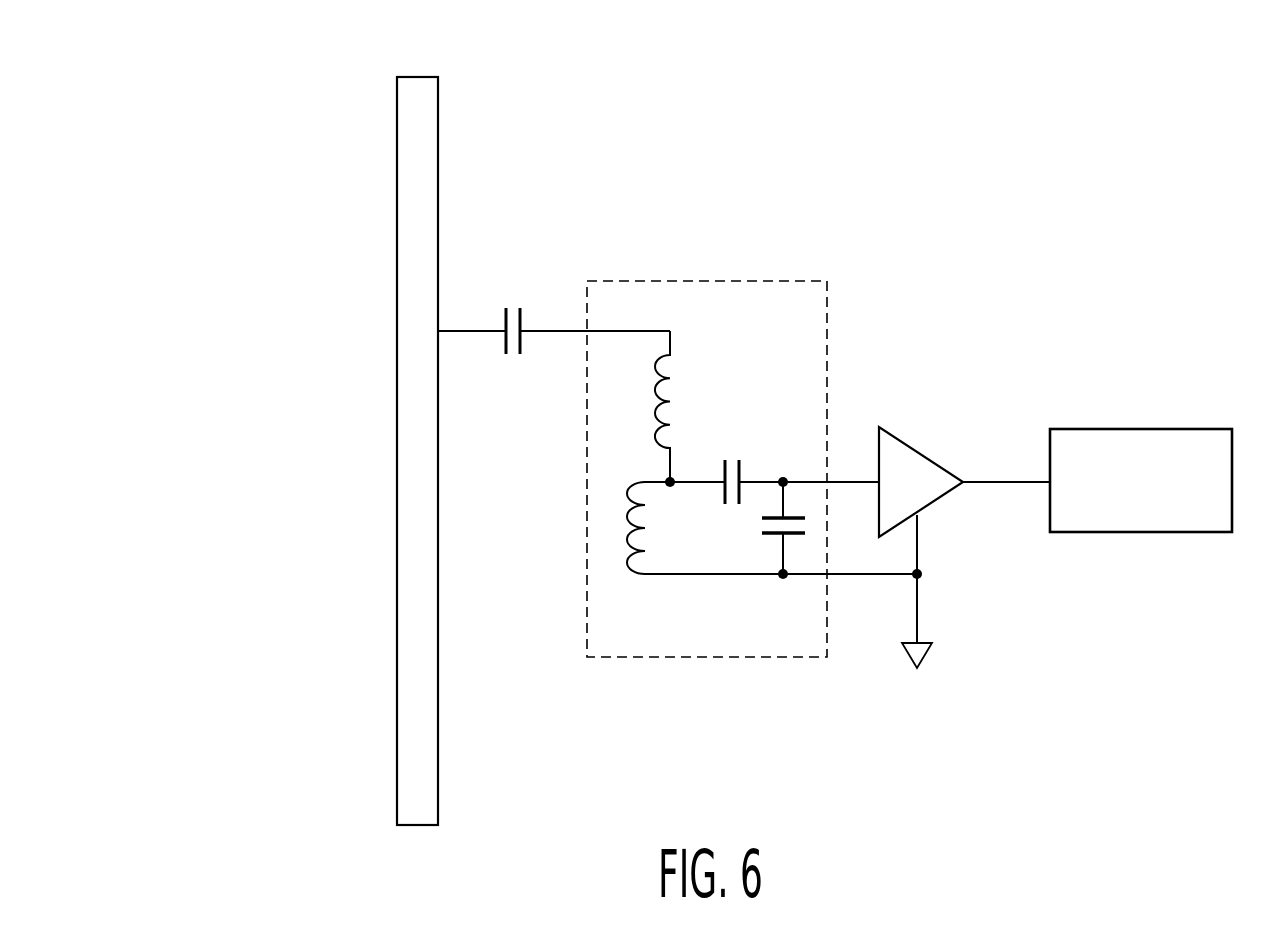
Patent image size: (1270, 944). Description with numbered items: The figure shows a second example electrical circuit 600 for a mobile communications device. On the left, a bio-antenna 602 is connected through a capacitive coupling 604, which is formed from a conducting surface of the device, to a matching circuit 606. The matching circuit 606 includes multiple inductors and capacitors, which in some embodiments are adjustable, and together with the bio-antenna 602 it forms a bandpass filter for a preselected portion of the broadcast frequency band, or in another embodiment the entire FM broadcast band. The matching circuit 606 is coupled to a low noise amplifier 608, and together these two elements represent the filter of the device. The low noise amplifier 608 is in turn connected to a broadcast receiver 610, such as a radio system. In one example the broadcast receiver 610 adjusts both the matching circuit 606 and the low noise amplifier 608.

The electrical circuit 600 is at (262, 118).
The bio-antenna 602 is at (438, 123).
The capacitive coupling 604 is at (523, 310).
The matching circuit 606 is at (795, 281).
The low noise amplifier 608 is at (912, 447).
The broadcast receiver 610 is at (1157, 429).